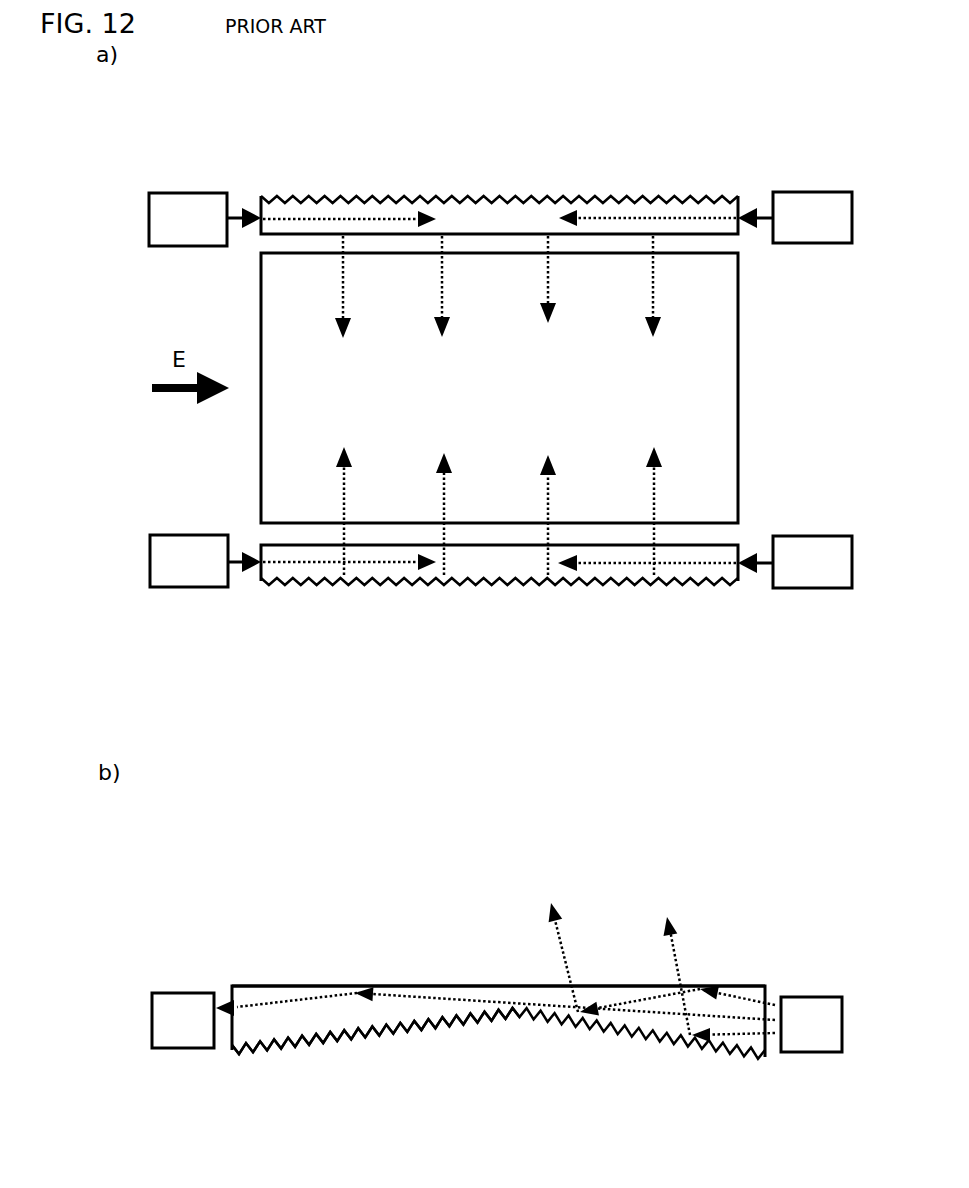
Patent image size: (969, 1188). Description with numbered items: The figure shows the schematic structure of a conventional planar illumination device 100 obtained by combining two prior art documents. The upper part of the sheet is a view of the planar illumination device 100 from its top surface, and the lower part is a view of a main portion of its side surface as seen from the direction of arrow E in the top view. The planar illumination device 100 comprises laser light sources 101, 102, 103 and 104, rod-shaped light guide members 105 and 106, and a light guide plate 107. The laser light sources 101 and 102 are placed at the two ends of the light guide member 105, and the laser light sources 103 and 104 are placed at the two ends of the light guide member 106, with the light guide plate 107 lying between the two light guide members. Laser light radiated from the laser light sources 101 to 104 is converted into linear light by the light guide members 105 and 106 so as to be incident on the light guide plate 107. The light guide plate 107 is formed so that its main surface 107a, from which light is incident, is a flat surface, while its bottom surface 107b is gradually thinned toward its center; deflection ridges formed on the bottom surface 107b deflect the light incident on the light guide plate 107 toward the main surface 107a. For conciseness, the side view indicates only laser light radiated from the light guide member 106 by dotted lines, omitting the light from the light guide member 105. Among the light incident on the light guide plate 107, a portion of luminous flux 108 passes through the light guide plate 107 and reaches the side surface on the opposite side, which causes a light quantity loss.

The planar illumination device 100 is at (214, 114).
The laser light source 101 is at (801, 208).
The laser light source 102 is at (166, 217).
The laser light source 103 is at (801, 553).
The laser light source 104 is at (182, 551).
The rod-shaped light guide member 105 is at (485, 207).
The rod-shaped light guide member 106 is at (497, 565).
The light guide plate 107 is at (279, 329).
The main surface 107a is at (450, 985).
The bottom surface 107b is at (325, 1037).
The luminous flux 108 is at (257, 1001).